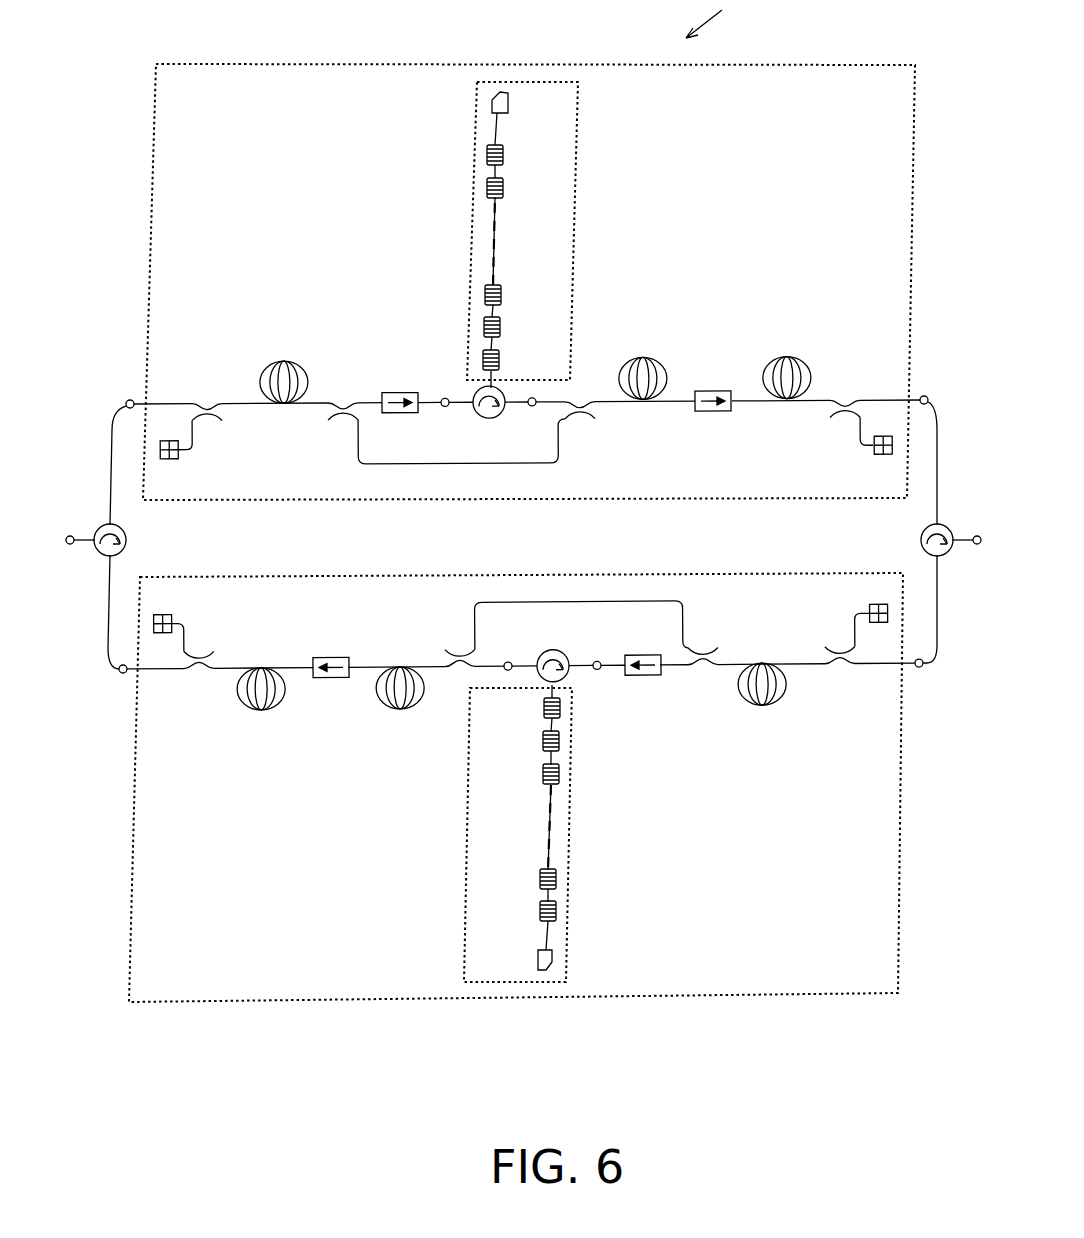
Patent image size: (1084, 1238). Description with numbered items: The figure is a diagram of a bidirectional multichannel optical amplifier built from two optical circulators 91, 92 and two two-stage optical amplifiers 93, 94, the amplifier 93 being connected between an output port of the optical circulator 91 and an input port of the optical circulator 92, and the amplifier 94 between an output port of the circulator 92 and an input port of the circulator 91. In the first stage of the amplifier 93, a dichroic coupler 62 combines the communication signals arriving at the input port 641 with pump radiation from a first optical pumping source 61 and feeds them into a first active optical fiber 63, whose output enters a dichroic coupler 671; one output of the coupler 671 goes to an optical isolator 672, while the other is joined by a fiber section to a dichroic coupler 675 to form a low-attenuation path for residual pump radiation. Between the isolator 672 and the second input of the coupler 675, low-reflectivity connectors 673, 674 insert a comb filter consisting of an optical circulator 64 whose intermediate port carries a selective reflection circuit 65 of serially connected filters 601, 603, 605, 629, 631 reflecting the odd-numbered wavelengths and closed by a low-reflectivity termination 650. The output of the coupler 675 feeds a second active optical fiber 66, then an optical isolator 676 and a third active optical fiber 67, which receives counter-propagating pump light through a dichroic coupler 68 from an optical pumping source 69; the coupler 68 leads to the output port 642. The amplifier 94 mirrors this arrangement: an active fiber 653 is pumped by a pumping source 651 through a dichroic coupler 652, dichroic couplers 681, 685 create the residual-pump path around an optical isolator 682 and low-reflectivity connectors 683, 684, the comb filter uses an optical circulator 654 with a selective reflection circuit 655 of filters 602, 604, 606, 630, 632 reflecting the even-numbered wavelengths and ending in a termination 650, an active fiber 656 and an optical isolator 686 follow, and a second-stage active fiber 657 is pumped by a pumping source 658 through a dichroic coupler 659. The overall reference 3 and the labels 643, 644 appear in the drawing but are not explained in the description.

The optical telecommunication system 3 is at (747, 8).
The optical amplifier 93 is at (918, 190).
The optical amplifier 94 is at (905, 870).
The optical circulator 91 is at (95, 528).
The optical circulator 92 is at (949, 524).
The input port 641 is at (129, 398).
The output port 642 is at (928, 395).
The connection port 643 is at (925, 673).
The connection port 644 is at (118, 680).
The first optical pumping source 61 is at (167, 468).
The dichroic coupler 62 is at (208, 395).
The first active optical fiber 63 is at (287, 360).
The optical circulator 64 is at (478, 416).
The selective reflection circuit 65 is at (585, 175).
The second active optical fiber 66 is at (642, 355).
The third active optical fiber 67 is at (787, 357).
The dichroic coupler 68 is at (847, 398).
The optical pumping source 69 is at (885, 465).
The dichroic coupler 671 is at (346, 398).
The optical isolator 672 is at (402, 394).
The low-reflectivity connector 673 is at (445, 398).
The low-reflectivity connector 674 is at (533, 409).
The dichroic coupler 675 is at (581, 421).
The optical isolator 676 is at (716, 392).
The filter 601 is at (502, 360).
The filter 603 is at (502, 327).
The filter 605 is at (502, 295).
The filter 629 is at (505, 188).
The filter 631 is at (505, 155).
The low-reflectivity termination 650 is at (512, 101).
The pumping source 651 is at (877, 607).
The dichroic coupler 652 is at (841, 674).
The active fiber section 653 is at (761, 715).
The optical circulator 654 is at (560, 655).
The selective reflection circuit 655 is at (580, 880).
The active fiber section 656 is at (400, 716).
The active fiber section 657 is at (260, 716).
The pumping source 658 is at (195, 680).
The dichroic coupler 659 is at (170, 612).
The dichroic coupler 681 is at (701, 672).
The optical isolator 682 is at (648, 683).
The optical connector 683 is at (596, 676).
The optical connector 684 is at (508, 663).
The dichroic coupler 685 is at (463, 651).
The optical isolator 686 is at (330, 686).
The filter 602 is at (541, 708).
The filter 604 is at (540, 741).
The filter 606 is at (540, 774).
The filter 630 is at (537, 879).
The filter 632 is at (537, 911).